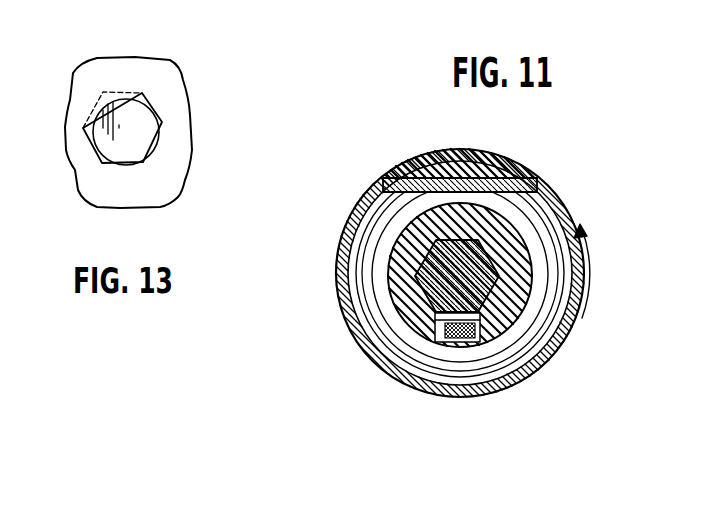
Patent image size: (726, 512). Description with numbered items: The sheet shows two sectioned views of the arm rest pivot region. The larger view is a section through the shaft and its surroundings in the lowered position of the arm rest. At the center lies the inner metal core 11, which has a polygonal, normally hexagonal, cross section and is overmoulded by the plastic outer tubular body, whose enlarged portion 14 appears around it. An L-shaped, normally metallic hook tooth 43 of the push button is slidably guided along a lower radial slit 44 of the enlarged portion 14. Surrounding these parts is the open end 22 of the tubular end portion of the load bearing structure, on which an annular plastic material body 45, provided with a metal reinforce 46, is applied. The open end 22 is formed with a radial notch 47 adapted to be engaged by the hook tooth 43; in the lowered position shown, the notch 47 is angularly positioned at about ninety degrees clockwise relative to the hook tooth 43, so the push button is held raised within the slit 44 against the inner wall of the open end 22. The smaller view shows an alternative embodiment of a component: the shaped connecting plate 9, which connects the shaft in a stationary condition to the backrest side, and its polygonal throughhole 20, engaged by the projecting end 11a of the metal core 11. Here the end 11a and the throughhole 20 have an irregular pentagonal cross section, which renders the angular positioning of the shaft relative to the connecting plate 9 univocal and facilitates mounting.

In FIG. 13, the connecting plate 9 is at (122, 183).
In FIG. 13, the polygonal throughhole 20 is at (101, 146).
In FIG. 13, the end of the metal core 11a is at (133, 138).
In FIG. 11, the annular plastic material body 45 is at (462, 163).
In FIG. 11, the lower radial slit 44 is at (488, 390).
In FIG. 11, the metal reinforce 46 is at (537, 207).
In FIG. 11, the hook tooth 43 is at (433, 357).
In FIG. 11, the radial notch 47 is at (385, 258).
In FIG. 11, the enlarged portion 14 is at (400, 183).
In FIG. 11, the inner metal core 11 is at (432, 236).
In FIG. 11, the open end 22 is at (362, 323).